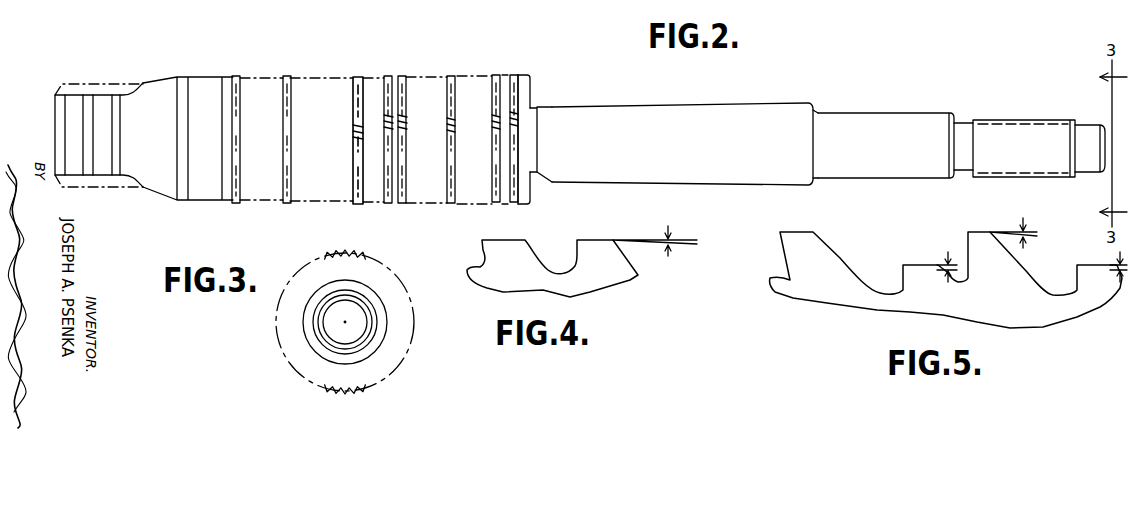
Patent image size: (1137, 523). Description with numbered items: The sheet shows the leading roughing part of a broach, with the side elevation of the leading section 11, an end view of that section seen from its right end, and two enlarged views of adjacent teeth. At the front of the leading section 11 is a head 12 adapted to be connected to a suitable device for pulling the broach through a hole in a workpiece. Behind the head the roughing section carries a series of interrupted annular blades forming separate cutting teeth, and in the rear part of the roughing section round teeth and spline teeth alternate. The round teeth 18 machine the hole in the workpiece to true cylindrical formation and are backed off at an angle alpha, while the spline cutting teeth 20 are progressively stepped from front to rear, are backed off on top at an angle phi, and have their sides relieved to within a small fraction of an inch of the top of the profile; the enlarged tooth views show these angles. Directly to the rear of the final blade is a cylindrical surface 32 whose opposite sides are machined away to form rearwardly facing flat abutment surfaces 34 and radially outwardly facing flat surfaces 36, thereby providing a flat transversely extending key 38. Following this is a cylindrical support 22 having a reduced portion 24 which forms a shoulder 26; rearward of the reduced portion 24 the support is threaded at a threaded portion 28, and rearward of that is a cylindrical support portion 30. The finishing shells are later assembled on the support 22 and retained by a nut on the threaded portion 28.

In FIG. 2, the leading section 11 is at (166, 82).
In FIG. 2, the head 12 is at (73, 170).
In FIG. 5, the round teeth 18 is at (927, 275).
In FIG. 4, the spline cutting teeth 20 is at (510, 248).
In FIG. 5, the spline cutting teeth 20 is at (802, 238).
In FIG. 2, the cylindrical support 22 is at (685, 104).
In FIG. 2, the reduced portion 24 is at (872, 112).
In FIG. 2, the shoulder 26 is at (956, 121).
In FIG. 2, the threaded portion 28 is at (1025, 119).
In FIG. 2, the cylindrical support portion 30 is at (1090, 124).
In FIG. 2, the cylindrical surface 32 is at (519, 76).
In FIG. 2, the rearwardly facing flat abutment surfaces 34 is at (530, 84).
In FIG. 2, the radially outwardly facing flat surfaces 36 is at (546, 104).
In FIG. 2, the key 38 is at (533, 165).